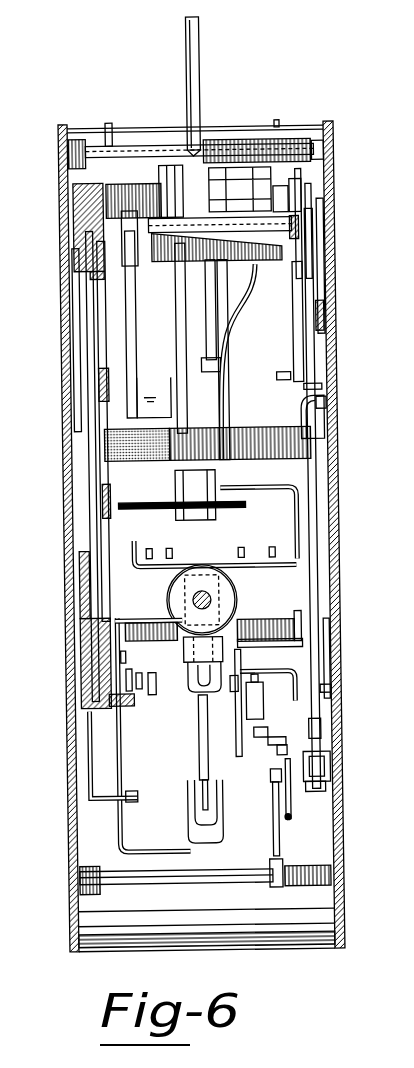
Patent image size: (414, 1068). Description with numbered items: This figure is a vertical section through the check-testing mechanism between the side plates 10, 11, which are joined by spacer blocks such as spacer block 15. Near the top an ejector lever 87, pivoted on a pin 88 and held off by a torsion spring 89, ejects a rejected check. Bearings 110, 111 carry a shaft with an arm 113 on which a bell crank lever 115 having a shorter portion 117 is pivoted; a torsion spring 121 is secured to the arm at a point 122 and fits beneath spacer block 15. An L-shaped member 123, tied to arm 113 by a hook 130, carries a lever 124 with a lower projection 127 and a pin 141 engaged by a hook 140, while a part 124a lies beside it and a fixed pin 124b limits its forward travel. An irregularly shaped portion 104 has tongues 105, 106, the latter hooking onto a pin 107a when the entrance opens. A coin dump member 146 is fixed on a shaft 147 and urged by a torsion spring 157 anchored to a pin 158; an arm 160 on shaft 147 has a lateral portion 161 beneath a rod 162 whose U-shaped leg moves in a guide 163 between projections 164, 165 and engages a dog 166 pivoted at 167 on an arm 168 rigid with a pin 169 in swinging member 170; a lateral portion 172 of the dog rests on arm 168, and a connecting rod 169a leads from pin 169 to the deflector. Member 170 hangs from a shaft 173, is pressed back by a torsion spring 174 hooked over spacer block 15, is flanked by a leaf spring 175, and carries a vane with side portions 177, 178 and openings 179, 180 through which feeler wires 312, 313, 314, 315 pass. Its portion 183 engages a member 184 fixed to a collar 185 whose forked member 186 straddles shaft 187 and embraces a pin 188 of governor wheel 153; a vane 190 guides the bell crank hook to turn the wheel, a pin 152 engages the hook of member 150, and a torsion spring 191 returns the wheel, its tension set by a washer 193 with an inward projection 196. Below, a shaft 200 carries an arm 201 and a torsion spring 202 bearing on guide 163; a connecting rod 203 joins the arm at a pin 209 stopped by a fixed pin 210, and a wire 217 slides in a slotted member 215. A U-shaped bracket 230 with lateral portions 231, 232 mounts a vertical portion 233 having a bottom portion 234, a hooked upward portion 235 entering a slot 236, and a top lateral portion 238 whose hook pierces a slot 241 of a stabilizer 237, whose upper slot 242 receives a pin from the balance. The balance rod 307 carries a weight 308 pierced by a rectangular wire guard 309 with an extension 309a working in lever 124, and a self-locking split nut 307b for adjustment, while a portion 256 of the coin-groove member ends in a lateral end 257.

The housing 10 is at (334, 271).
The side plate 11 is at (80, 387).
The bearing block 15 is at (72, 126).
The operating rod 87 is at (200, 31).
The end block 88 is at (314, 137).
The spring 89 is at (279, 143).
The rod 104 is at (285, 270).
The rod 105 is at (332, 191).
The rod 106 is at (290, 353).
The bar 107a is at (330, 368).
The rod 110 is at (335, 224).
The plate 111 is at (66, 238).
The rod 113 is at (132, 317).
The rod 115 is at (124, 352).
The block 117 is at (116, 256).
The gear 121 is at (225, 270).
The rod 122 is at (157, 283).
The rack bar 123 is at (231, 231).
The rod 124 is at (311, 595).
The bar 124a is at (281, 372).
The bar 124b is at (300, 687).
The block 127 is at (330, 709).
The hub 130 is at (143, 264).
The rod 140 is at (331, 338).
The block 141 is at (329, 322).
The bracket 146 is at (330, 670).
The wall 147 is at (333, 617).
The hatched block 150 is at (66, 226).
The pipe 152 is at (126, 606).
The rod 153 is at (80, 347).
The spring end 157 is at (236, 600).
The spring 158 is at (129, 653).
The spring 160 is at (292, 610).
The spring seat 161 is at (245, 608).
The rod 162 is at (228, 750).
The rod 163 is at (329, 727).
The lever 164 is at (271, 746).
The lever 165 is at (274, 720).
The pipe 166 is at (280, 692).
The link 167 is at (261, 717).
The rod 168 is at (239, 727).
The block 169 is at (147, 673).
The block 169a is at (156, 700).
The rod 170 is at (172, 400).
The valve 172 is at (245, 700).
The block 173 is at (181, 190).
The gear 174 is at (159, 195).
The rod 175 is at (201, 391).
The plate 177 is at (104, 540).
The bar 178 is at (316, 530).
The bar 179 is at (314, 512).
The block 180 is at (67, 533).
The rod 183 is at (206, 312).
The tube 184 is at (204, 333).
The block 185 is at (247, 176).
The spring 186 is at (221, 409).
The block 187 is at (332, 426).
The bar 188 is at (225, 508).
The box 190 is at (160, 372).
The spring 191 is at (287, 422).
The wall 193 is at (331, 464).
The block 196 is at (332, 401).
The shaft 200 is at (151, 883).
The rod 201 is at (262, 845).
The spring 202 is at (314, 860).
The rod 203 is at (268, 758).
The block 209 is at (332, 750).
The block 210 is at (331, 760).
The block 215 is at (326, 794).
The pin 217 is at (323, 809).
The pipe 230 is at (73, 751).
The tube 231 is at (103, 770).
The block 232 is at (109, 710).
The pipe 233 is at (110, 744).
The pipe 234 is at (157, 830).
The U-tube 235 is at (216, 834).
The inner tube 236 is at (185, 805).
The rod 237 is at (197, 770).
The pipe 238 is at (149, 615).
The fork 241 is at (192, 693).
The pipe 242 is at (158, 572).
The ball 256 is at (285, 800).
The knob 257 is at (217, 684).
The disc 307 is at (194, 592).
The disc part 307b is at (228, 579).
The block 308 is at (228, 524).
The pipe 309 is at (300, 492).
The pipe 309a is at (324, 552).
The valve 312 is at (144, 552).
The valve 313 is at (162, 547).
The valve 314 is at (224, 547).
The valve 315 is at (279, 545).